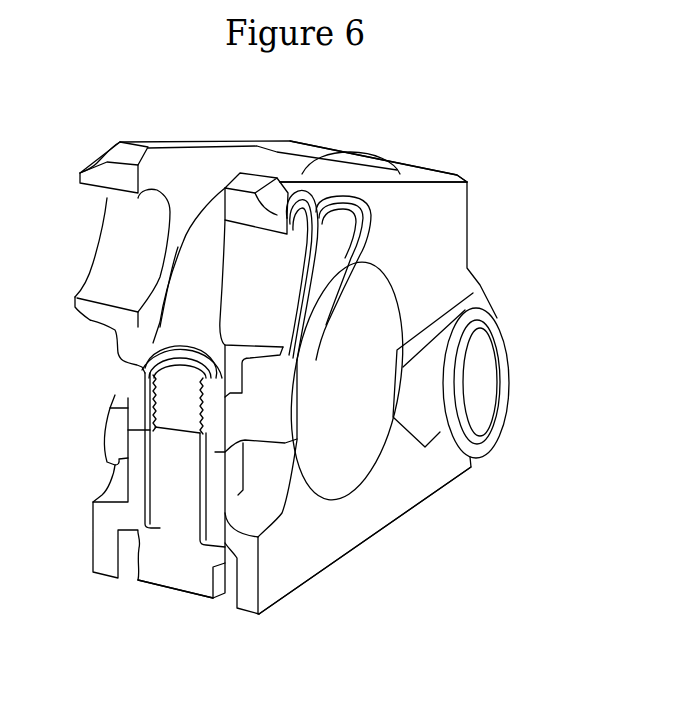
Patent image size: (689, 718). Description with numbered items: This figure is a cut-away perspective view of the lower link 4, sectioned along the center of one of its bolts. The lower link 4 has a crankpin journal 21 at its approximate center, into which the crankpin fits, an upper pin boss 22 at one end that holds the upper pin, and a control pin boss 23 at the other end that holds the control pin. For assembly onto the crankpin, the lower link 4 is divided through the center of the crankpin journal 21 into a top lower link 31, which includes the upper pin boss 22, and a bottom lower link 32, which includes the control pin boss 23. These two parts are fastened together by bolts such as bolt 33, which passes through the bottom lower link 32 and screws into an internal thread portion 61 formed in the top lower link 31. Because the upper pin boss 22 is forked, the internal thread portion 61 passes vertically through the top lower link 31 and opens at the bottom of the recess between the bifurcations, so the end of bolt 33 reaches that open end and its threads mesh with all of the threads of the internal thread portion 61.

The lower link 4 is at (480, 234).
The crankpin journal 21 is at (341, 478).
The upper pin boss 22 is at (120, 153).
The control pin boss 23 is at (489, 388).
The top lower link 31 is at (455, 188).
The bottom lower link 32 is at (410, 483).
The bolt 33 is at (173, 562).
The internal thread portion 61 is at (145, 376).